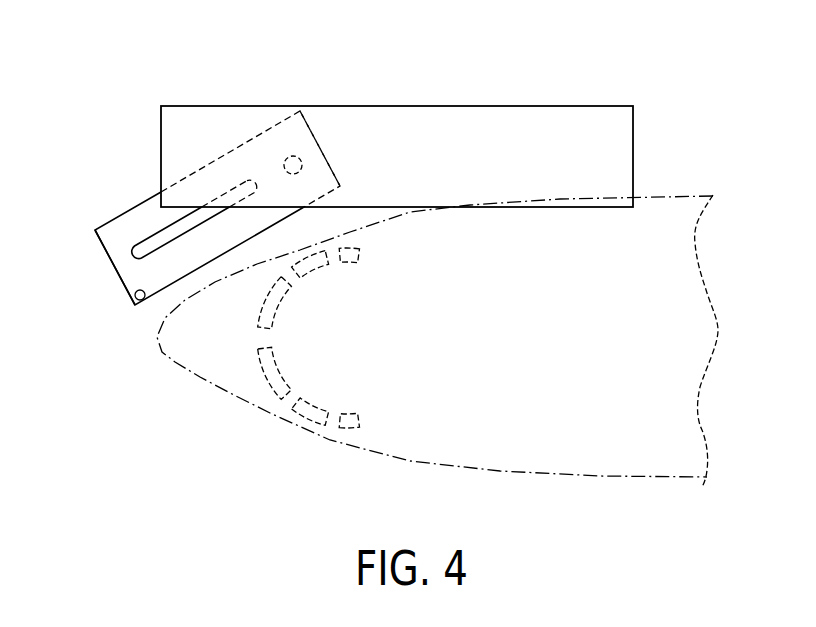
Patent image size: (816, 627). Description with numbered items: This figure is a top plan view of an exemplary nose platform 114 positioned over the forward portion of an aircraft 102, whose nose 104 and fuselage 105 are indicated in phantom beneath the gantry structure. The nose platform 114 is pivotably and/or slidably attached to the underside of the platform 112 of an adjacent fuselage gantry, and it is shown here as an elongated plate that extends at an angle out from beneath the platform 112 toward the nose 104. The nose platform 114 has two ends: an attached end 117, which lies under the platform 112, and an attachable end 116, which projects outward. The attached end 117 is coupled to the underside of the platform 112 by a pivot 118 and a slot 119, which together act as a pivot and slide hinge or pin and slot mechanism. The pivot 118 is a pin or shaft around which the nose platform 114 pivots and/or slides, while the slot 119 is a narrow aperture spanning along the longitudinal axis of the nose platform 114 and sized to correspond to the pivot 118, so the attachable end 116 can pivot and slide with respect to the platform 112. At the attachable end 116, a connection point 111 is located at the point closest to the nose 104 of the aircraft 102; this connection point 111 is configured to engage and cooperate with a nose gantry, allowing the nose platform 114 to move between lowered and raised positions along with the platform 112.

The aircraft 102 is at (607, 500).
The nose 104 is at (192, 343).
The fuselage 105 is at (670, 323).
The connection point 111 is at (135, 300).
The platform 112 is at (537, 170).
The nose platform 114 is at (122, 230).
The attachable end 116 is at (100, 270).
The attached end 117 is at (344, 159).
The pivot 118 is at (303, 160).
The slot 119 is at (252, 186).